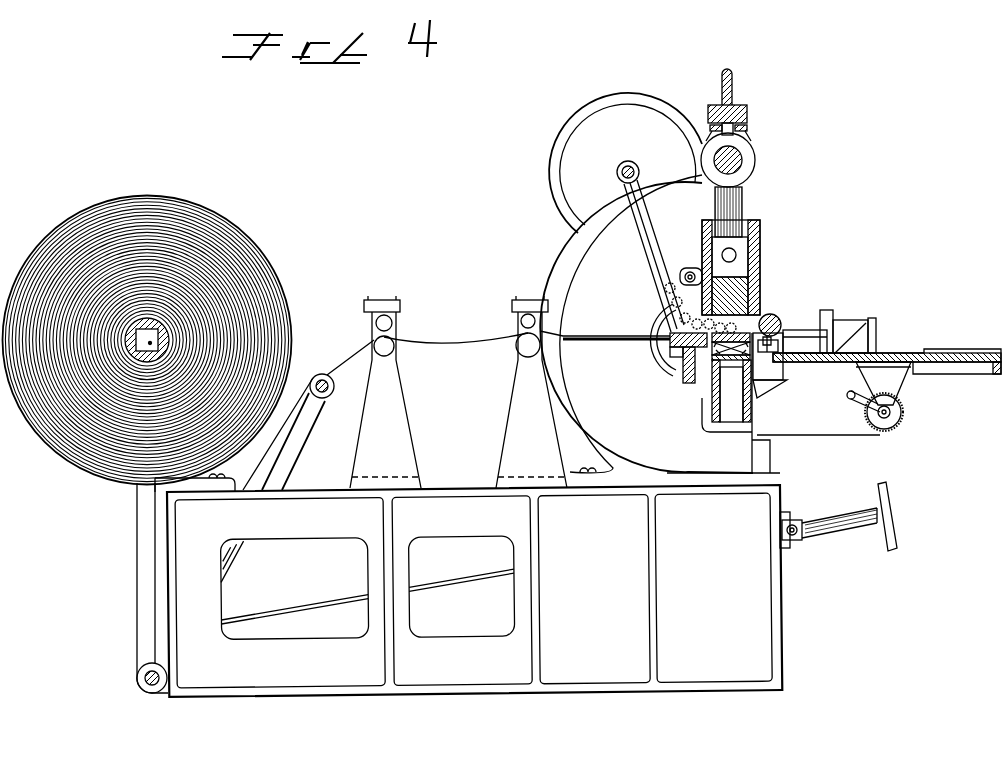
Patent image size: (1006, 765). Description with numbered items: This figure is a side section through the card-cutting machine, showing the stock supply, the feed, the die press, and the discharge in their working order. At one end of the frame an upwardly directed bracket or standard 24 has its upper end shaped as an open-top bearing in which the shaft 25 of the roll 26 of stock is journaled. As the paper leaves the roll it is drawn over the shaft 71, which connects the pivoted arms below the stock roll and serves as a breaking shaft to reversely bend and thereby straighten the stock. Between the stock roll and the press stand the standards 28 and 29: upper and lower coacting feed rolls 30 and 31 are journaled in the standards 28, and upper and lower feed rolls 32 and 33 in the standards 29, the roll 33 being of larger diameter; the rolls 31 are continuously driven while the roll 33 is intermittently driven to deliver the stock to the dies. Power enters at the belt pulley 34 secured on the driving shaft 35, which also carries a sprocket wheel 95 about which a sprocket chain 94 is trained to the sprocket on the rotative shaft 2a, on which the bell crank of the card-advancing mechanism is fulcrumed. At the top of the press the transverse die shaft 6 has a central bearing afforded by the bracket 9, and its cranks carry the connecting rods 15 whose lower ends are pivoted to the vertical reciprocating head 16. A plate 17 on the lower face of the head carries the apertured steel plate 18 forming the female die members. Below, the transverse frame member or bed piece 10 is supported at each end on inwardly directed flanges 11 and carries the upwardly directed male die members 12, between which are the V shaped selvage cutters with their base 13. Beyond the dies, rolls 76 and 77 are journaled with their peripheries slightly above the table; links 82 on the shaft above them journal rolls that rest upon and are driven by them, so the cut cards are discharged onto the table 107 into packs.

The roll of stock 26 is at (185, 213).
The shaft 25 is at (165, 326).
The bracket or standard 24 is at (148, 578).
The shaft 71 is at (320, 374).
The standard 28 is at (405, 417).
The standard 29 is at (512, 397).
The upper feed roll 30 is at (384, 316).
The lower feed roll 31 is at (373, 342).
The upper feed roll 32 is at (528, 310).
The lower feed roll 33 is at (517, 337).
The belt pulley 34 is at (656, 108).
The shaft 35 is at (615, 183).
The sprocket wheel 95 is at (640, 172).
The sprocket chain 94 is at (660, 258).
The rotative shaft 2a is at (667, 290).
The bracket 9 is at (748, 152).
The transverse shaft 6 is at (755, 163).
The connecting rod 15 is at (743, 207).
The vertical reciprocating head 16 is at (760, 240).
The plate 18 is at (686, 357).
The base 13 is at (730, 350).
The plate 17 is at (745, 326).
The flange 11 is at (735, 428).
The male die member 12 is at (787, 307).
The transverse frame member 10 is at (753, 413).
The link 82 is at (773, 322).
The roll 76 is at (766, 348).
The roll 77 is at (783, 337).
The table 107 is at (960, 357).